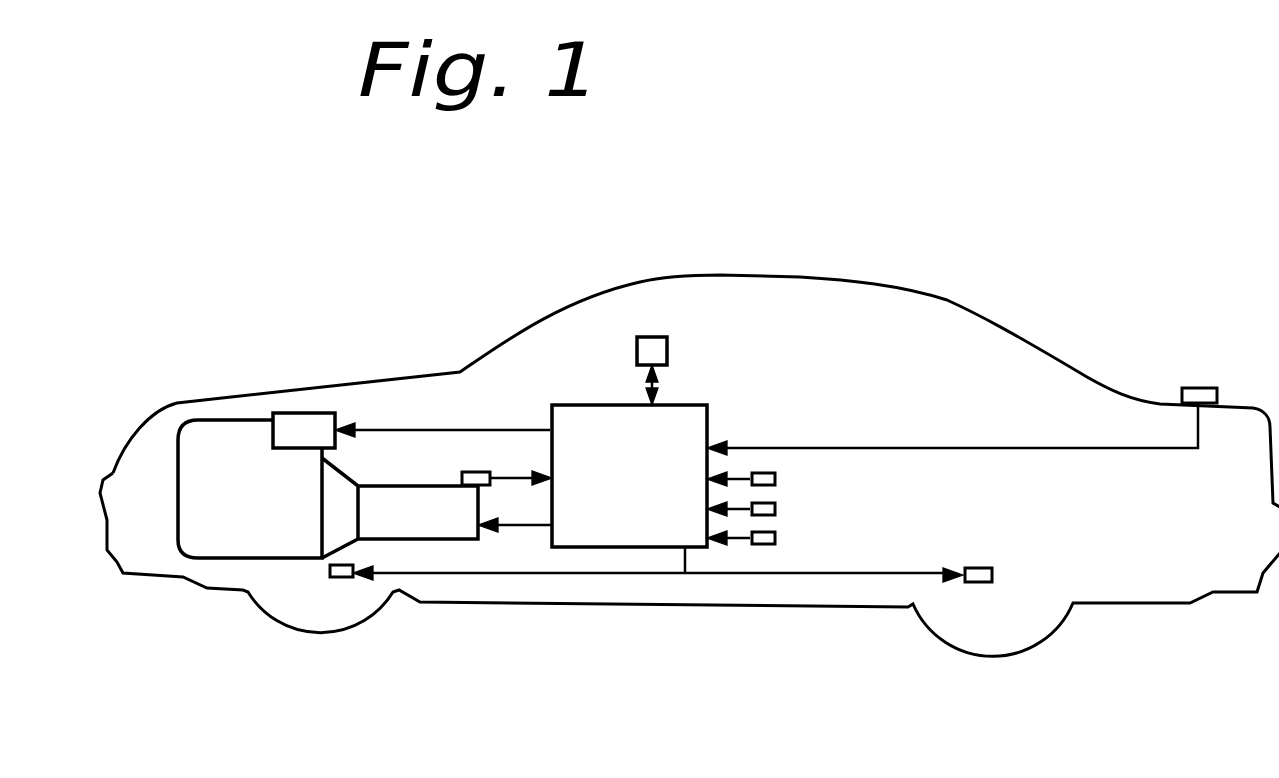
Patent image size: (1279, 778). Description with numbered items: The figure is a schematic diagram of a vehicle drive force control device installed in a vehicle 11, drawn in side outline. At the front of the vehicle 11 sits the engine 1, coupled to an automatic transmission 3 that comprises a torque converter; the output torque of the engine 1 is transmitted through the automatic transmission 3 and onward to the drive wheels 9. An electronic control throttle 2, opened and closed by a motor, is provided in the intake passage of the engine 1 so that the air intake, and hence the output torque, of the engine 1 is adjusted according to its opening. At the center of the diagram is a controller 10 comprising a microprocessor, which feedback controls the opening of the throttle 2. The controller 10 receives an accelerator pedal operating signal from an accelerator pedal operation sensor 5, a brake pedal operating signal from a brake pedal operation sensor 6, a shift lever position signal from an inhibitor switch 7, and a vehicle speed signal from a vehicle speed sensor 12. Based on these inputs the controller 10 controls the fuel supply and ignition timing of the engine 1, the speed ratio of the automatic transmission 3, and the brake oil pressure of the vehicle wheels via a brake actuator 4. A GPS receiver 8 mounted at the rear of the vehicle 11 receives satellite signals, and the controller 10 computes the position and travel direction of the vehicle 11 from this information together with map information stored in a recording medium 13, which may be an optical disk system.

The engine 1 is at (202, 435).
The electronic control throttle 2 is at (290, 414).
The automatic transmission 3 is at (450, 540).
The brake actuator 4 is at (337, 580).
The accelerator pedal operation sensor 5 is at (768, 545).
The brake pedal operation sensor 6 is at (777, 510).
The inhibitor switch 7 is at (764, 472).
The GPS receiver 8 is at (1210, 388).
The drive wheels 9 is at (1007, 660).
The controller 10 is at (575, 404).
The vehicle 11 is at (1052, 350).
The vehicle speed sensor 12 is at (473, 470).
The recording medium 13 is at (650, 337).